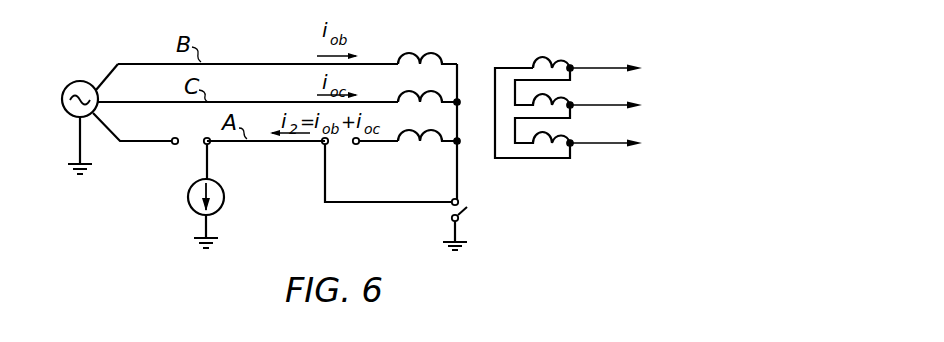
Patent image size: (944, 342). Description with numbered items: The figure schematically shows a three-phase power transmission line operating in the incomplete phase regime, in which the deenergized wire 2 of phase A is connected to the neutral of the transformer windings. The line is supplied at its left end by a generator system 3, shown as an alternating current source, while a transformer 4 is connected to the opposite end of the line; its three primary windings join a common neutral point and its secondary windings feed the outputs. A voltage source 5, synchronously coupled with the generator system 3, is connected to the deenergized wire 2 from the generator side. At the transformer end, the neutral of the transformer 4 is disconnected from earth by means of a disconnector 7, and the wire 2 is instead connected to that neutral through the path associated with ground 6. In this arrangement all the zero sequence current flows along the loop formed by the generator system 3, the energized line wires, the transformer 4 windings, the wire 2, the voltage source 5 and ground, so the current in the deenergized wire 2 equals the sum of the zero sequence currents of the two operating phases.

The deenergized wire 2 is at (282, 143).
The generator system 3 is at (79, 81).
The transformer 4 is at (520, 113).
The voltage source 5 is at (224, 196).
The ground 6 is at (326, 177).
The disconnector 7 is at (468, 212).